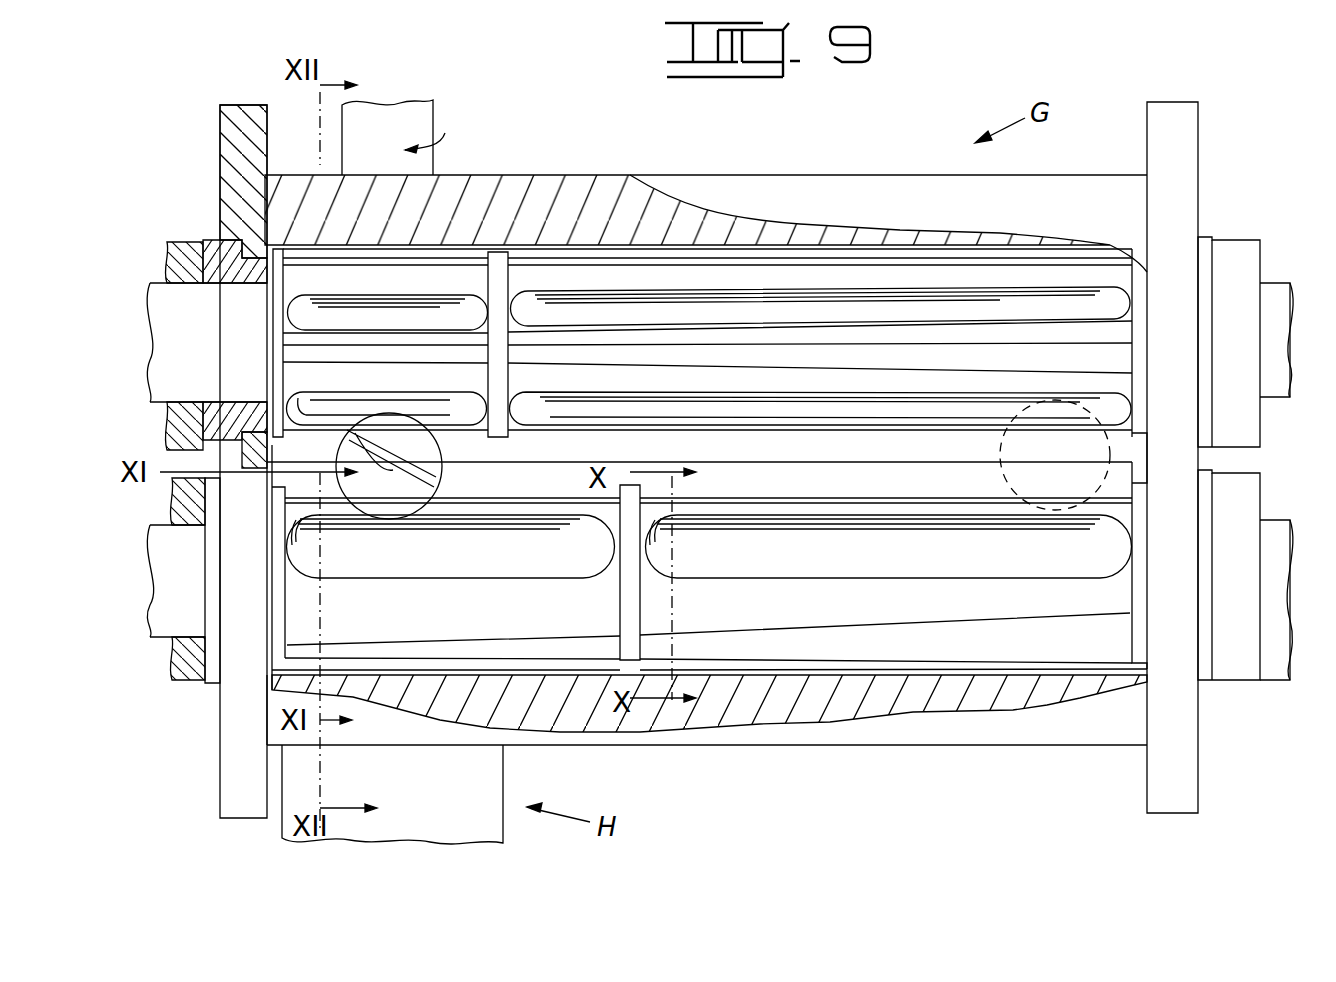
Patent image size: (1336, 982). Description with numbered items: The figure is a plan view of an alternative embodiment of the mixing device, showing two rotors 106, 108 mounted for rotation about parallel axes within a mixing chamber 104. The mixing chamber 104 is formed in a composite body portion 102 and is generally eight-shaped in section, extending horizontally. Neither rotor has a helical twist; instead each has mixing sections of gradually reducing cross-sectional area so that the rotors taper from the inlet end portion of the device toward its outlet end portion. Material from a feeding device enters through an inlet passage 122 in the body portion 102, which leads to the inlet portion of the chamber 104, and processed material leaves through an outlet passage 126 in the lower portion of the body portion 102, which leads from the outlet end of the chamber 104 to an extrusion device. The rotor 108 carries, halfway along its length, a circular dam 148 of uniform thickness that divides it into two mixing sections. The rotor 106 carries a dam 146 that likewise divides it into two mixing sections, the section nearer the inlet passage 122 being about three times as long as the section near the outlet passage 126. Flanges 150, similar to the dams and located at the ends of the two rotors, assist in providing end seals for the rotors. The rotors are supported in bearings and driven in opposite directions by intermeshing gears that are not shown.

The composite body portion 102 is at (993, 725).
The mixing chamber 104 is at (1135, 469).
The rotor 106 is at (694, 275).
The rotor 108 is at (866, 642).
The inlet passage 122 is at (1108, 447).
The outlet passage 126 is at (340, 446).
The dam 146 is at (503, 268).
The circular dam 148 is at (636, 600).
The flanges 150 is at (245, 252).